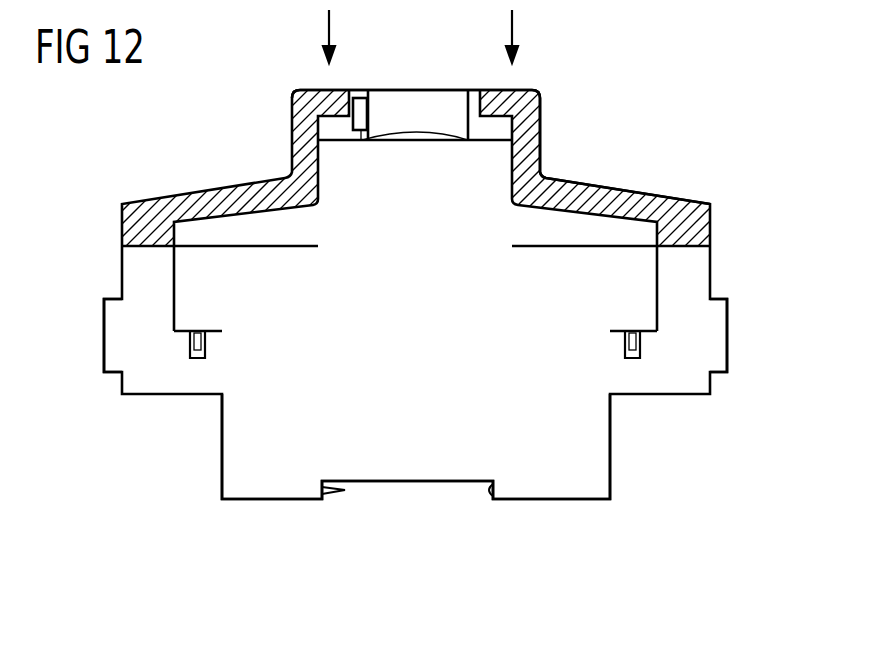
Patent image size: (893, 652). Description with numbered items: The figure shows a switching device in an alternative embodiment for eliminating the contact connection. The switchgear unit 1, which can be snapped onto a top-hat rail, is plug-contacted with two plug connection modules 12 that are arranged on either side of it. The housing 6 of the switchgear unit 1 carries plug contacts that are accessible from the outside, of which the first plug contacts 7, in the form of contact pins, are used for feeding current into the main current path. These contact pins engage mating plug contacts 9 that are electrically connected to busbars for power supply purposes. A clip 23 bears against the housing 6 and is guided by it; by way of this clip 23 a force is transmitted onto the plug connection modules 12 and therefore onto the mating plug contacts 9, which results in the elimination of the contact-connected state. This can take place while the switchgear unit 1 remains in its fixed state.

The switchgear unit 1 is at (196, 479).
The housing 6 is at (590, 477).
The first plug contacts 7 is at (190, 345).
The mating plug contacts 9 is at (198, 360).
The plug connection module 12 is at (120, 337).
The clip 23 is at (603, 190).